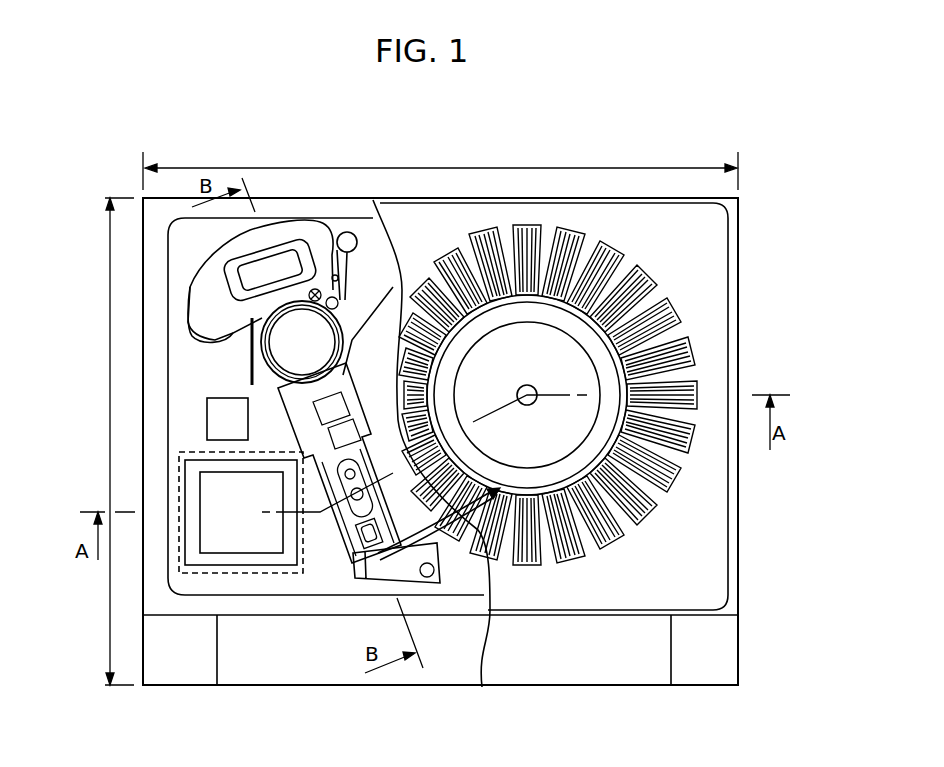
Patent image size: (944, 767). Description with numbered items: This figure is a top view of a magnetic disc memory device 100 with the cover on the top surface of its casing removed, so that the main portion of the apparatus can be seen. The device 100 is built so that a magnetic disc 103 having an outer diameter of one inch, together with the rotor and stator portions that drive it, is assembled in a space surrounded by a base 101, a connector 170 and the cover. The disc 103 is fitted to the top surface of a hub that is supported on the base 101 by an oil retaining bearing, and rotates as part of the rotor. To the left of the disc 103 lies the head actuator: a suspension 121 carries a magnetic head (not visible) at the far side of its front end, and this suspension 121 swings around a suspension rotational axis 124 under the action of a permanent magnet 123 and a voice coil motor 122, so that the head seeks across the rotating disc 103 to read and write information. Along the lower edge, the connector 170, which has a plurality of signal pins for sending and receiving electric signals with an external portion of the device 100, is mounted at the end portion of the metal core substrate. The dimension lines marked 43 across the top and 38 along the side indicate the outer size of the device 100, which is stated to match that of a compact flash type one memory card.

The magnetic disc memory device 100 is at (690, 145).
The base 101 is at (733, 592).
The magnetic disc 103 is at (457, 553).
The suspension 121 is at (343, 480).
The voice coil motor 122 is at (300, 238).
The permanent magnet 123 is at (203, 322).
The suspension rotational axis 124 is at (302, 342).
The connector 170 is at (593, 668).
The height dimension 38 is at (110, 441).
The width dimension 43 is at (440, 167).